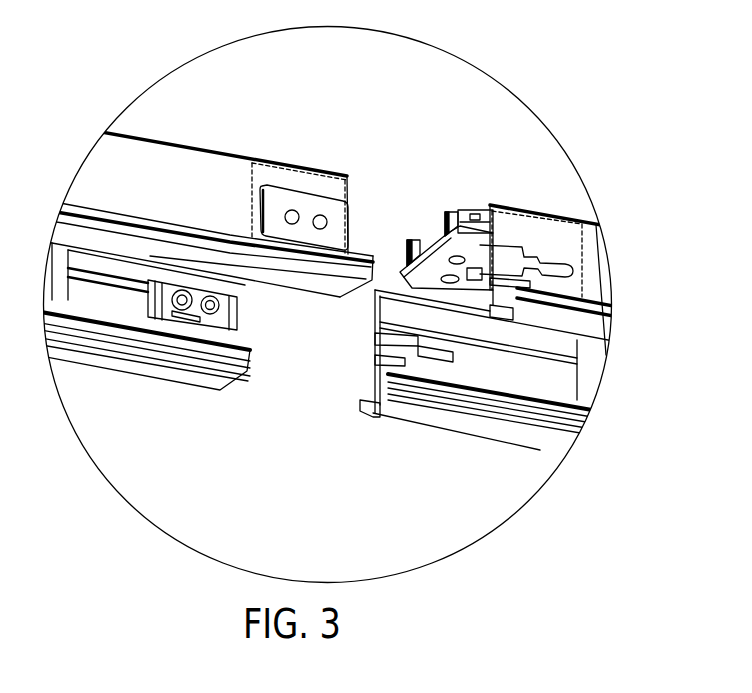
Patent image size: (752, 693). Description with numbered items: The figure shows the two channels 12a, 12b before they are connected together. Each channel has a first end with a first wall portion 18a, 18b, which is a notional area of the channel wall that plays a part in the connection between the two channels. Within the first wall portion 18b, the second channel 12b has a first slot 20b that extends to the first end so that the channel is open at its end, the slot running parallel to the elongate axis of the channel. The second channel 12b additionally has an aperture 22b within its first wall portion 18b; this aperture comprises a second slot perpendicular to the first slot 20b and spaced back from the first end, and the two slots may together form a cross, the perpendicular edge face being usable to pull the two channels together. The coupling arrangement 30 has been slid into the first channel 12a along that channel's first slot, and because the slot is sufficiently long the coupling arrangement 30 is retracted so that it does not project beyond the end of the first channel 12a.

The first channel 12a is at (158, 402).
The second channel 12b is at (445, 451).
The first wall portion 18a is at (252, 178).
The first wall portion 18b is at (587, 245).
The first slot 20b is at (552, 262).
The aperture 22b is at (517, 246).
The coupling arrangement 30 is at (240, 303).